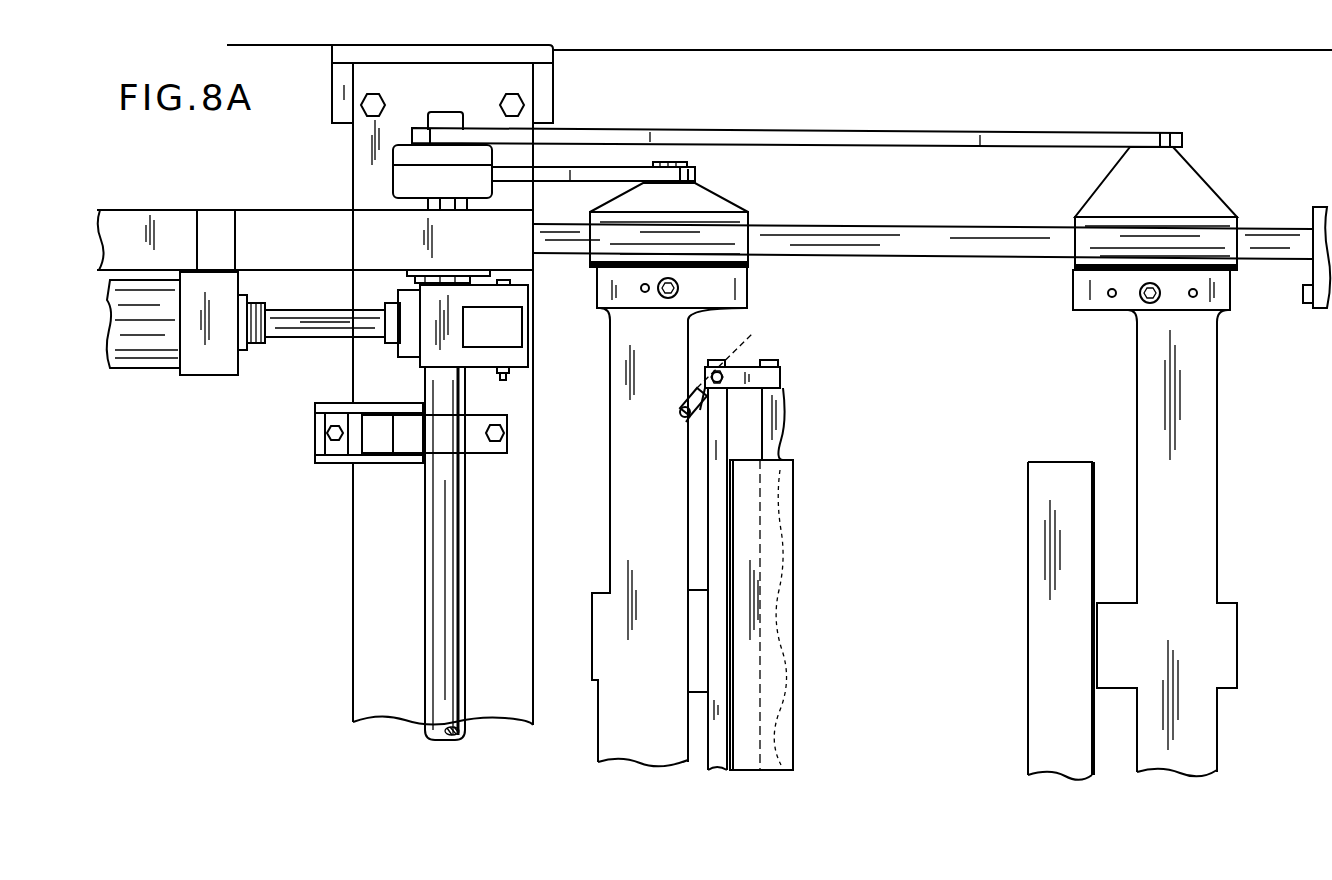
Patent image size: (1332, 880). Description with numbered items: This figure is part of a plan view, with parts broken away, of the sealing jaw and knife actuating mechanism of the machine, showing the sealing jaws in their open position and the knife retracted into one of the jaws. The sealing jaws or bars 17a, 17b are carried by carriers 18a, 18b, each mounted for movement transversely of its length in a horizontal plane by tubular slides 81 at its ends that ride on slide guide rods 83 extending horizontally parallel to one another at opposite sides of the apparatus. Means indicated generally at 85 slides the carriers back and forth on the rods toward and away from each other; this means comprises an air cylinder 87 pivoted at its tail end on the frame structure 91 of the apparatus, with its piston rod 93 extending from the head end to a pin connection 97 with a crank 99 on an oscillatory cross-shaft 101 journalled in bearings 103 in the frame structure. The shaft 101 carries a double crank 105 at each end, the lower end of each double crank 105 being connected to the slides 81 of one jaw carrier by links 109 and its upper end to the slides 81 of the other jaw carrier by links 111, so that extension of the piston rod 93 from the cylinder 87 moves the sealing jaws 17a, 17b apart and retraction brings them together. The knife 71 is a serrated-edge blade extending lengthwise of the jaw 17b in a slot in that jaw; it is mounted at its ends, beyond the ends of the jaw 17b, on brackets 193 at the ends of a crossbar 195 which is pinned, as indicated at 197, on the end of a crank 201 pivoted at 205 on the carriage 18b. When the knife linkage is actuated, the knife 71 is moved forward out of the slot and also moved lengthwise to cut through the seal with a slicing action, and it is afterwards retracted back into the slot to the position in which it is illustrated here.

The sealing jaw 17a is at (1028, 568).
The sealing jaw 17b is at (793, 592).
The carrier 18a is at (1200, 535).
The carrier 18b is at (612, 542).
The knife 71 is at (772, 437).
The tubular slide 81 is at (727, 228).
The slide guide rod 83 is at (920, 233).
The means for sliding the carriers 85 is at (213, 388).
The air cylinder 87 is at (163, 353).
The frame structure 91 is at (156, 182).
The piston rod 93 is at (337, 332).
The pin connection 97 is at (504, 382).
The crank 99 is at (508, 328).
The oscillatory cross-shaft 101 is at (440, 557).
The bearing 103 is at (396, 270).
The double crank 105 is at (402, 176).
The link 109 is at (593, 178).
The link 111 is at (888, 138).
The bracket 193 is at (750, 366).
The crossbar 195 is at (713, 490).
The pin 197 is at (750, 330).
The crank 201 is at (693, 385).
The pivot 205 is at (680, 420).